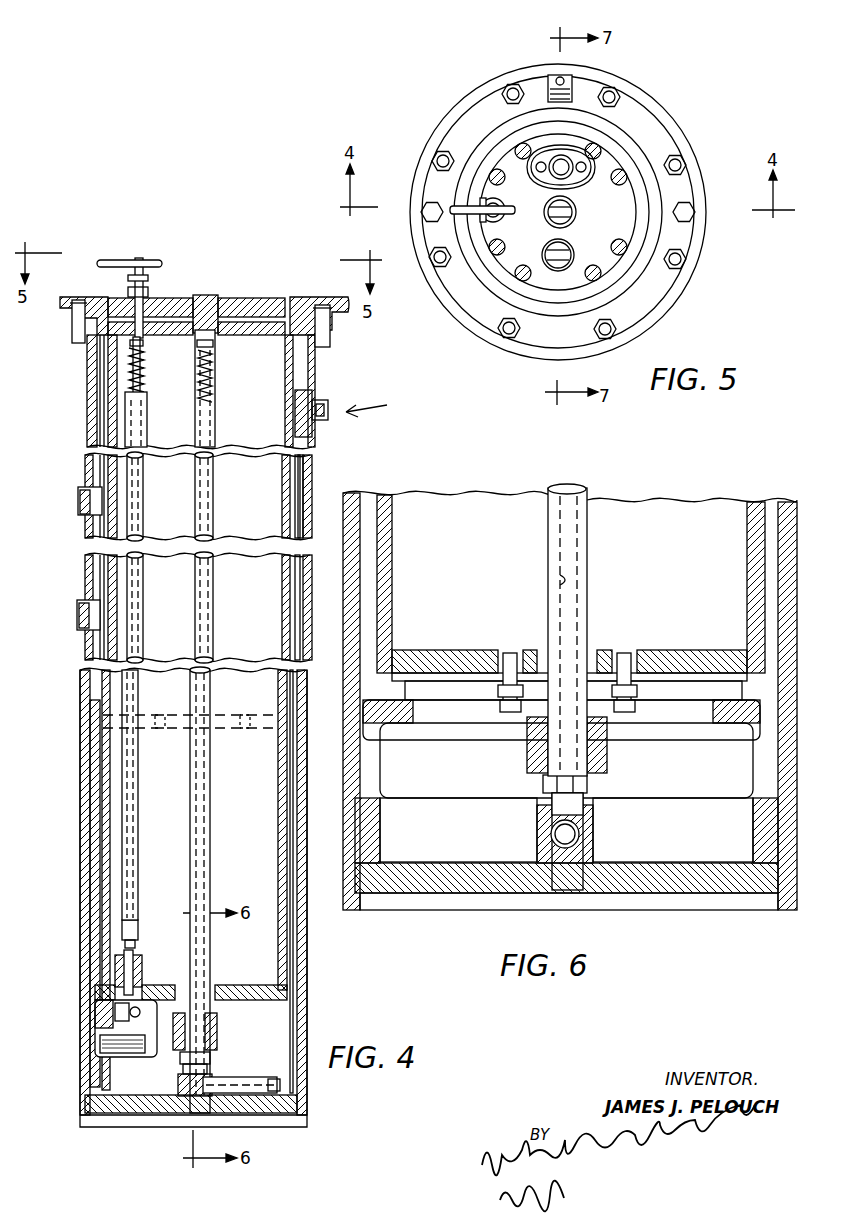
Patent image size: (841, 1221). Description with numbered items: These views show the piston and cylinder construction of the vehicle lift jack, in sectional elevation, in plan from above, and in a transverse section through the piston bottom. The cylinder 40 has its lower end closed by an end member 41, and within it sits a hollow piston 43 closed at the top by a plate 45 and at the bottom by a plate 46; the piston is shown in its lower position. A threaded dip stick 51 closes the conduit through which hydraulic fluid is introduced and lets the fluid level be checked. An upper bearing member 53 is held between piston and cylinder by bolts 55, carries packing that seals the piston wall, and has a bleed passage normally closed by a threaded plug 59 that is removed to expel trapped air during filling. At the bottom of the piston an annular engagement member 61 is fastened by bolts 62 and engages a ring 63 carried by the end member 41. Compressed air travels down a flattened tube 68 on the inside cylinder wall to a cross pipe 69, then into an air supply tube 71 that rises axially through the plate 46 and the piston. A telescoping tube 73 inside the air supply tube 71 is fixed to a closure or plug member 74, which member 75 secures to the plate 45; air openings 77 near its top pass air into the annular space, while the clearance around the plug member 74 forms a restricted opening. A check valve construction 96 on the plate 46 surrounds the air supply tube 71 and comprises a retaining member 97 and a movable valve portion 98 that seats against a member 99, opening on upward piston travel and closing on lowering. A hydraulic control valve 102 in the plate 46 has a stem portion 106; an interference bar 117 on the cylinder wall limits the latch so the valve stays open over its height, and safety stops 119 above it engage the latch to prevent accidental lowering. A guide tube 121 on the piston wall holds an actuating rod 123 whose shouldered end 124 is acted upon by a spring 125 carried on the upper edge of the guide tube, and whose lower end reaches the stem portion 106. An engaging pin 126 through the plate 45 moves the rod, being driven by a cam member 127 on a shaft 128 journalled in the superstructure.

In FIG. 4, the cylinder 40 is at (82, 795).
In FIG. 6, the cylinder 40 is at (792, 500).
In FIG. 4, the end member 41 is at (250, 1115).
In FIG. 6, the end member 41 is at (650, 895).
In FIG. 4, the piston 43 is at (279, 785).
In FIG. 6, the piston 43 is at (745, 546).
In FIG. 4, the plate 45 is at (255, 338).
In FIG. 4, the plate 46 is at (232, 985).
In FIG. 6, the plate 46 is at (693, 656).
In FIG. 5, the threaded dip stick 51 is at (565, 250).
In FIG. 4, the upper bearing member 53 is at (318, 298).
In FIG. 5, the upper bearing member 53 is at (455, 107).
In FIG. 5, the bolts 55 is at (508, 85).
In FIG. 5, the threaded plug 59 is at (556, 76).
In FIG. 4, the annular engagement member 61 is at (95, 1020).
In FIG. 6, the annular engagement member 61 is at (752, 763).
In FIG. 4, the bolts 62 is at (265, 1065).
In FIG. 6, the ring 63 is at (385, 832).
In FIG. 4, the flattened tube 68 is at (300, 480).
In FIG. 4, the cross pipe 69 is at (273, 1077).
In FIG. 4, the air supply tube 71 is at (210, 830).
In FIG. 6, the air supply tube 71 is at (548, 592).
In FIG. 4, the telescoping tube 73 is at (215, 405).
In FIG. 6, the telescoping tube 73 is at (558, 568).
In FIG. 4, the closure or plug member 74 is at (214, 352).
In FIG. 4, the member 75 is at (200, 295).
In FIG. 5, the member 75 is at (568, 219).
In FIG. 4, the air openings 77 is at (215, 383).
In FIG. 4, the check valve construction 96 is at (180, 988).
In FIG. 6, the check valve construction 96 is at (625, 748).
In FIG. 6, the retaining member 97 is at (500, 696).
In FIG. 6, the movable valve portion 98 is at (638, 692).
In FIG. 6, the valve seat member 99 is at (539, 653).
In FIG. 4, the hydraulic control valve 102 is at (68, 980).
In FIG. 4, the stem portion 106 is at (137, 955).
In FIG. 4, the interference bar 117 is at (92, 760).
In FIG. 4, the safety stops 119 is at (78, 500).
In FIG. 4, the guide tube 121 is at (143, 500).
In FIG. 4, the actuating rod 123 is at (135, 943).
In FIG. 4, the shouldered end 124 is at (145, 355).
In FIG. 4, the spring 125 is at (146, 378).
In FIG. 4, the engaging pin 126 is at (148, 278).
In FIG. 4, the cam member 127 is at (139, 258).
In FIG. 5, the cam member 127 is at (503, 218).
In FIG. 4, the shaft 128 is at (110, 260).
In FIG. 5, the shaft 128 is at (478, 200).